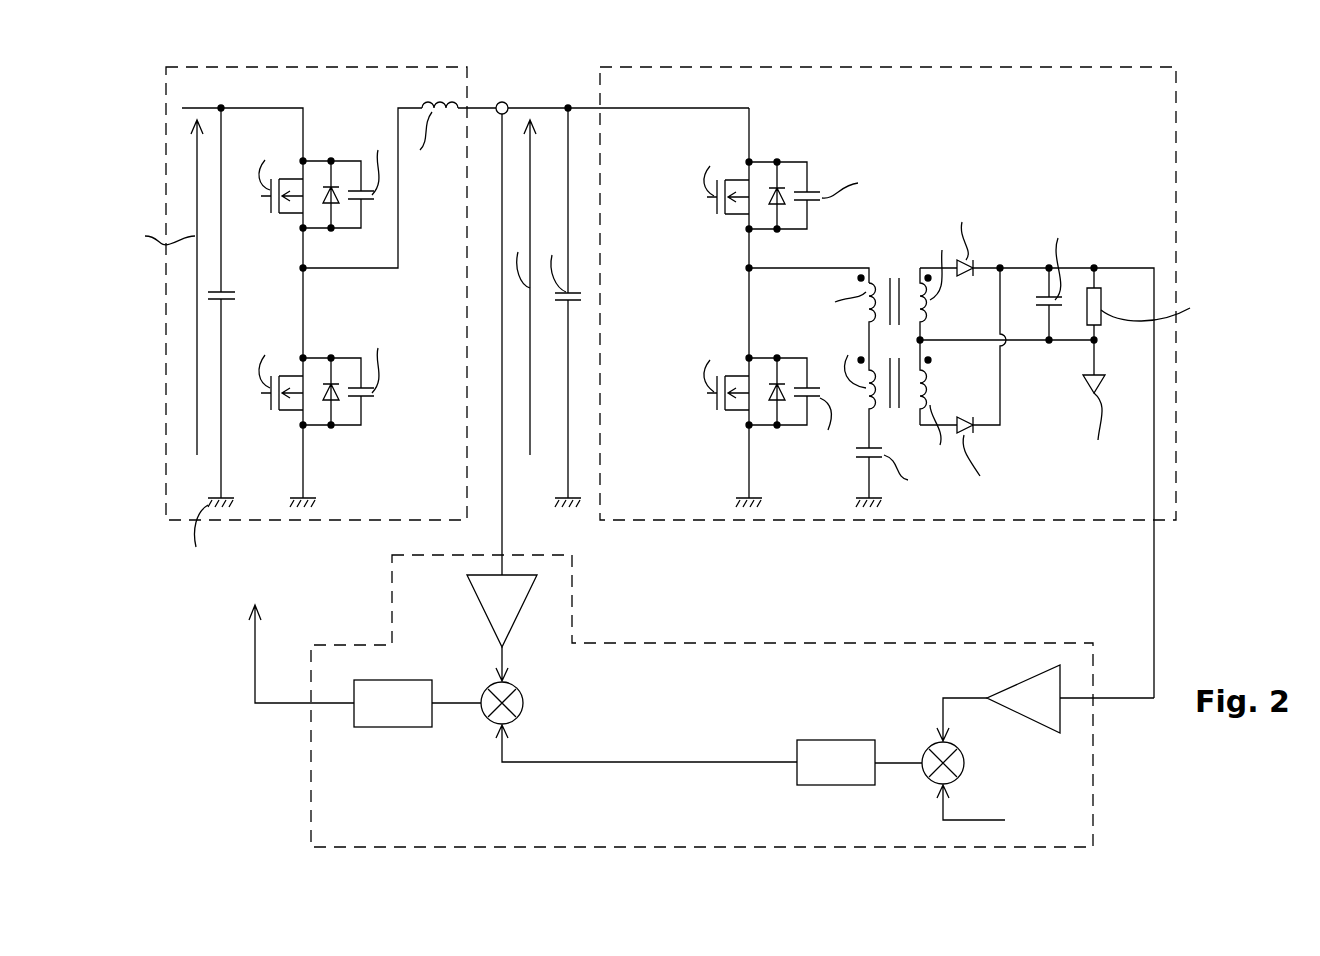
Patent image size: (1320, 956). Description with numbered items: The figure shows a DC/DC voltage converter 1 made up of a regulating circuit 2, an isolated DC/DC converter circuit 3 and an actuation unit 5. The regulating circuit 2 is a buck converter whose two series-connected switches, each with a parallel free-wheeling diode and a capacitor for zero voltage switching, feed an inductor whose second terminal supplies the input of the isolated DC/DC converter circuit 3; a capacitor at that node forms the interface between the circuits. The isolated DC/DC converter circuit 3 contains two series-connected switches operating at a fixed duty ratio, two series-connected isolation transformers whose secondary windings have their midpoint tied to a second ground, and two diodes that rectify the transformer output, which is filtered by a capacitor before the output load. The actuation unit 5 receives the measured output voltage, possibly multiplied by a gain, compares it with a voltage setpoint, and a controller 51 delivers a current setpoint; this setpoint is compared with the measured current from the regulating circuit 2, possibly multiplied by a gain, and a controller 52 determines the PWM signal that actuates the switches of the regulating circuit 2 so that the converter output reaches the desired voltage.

The converter 1 is at (139, 144).
The regulating circuit 2 is at (166, 290).
The isolated DC/DC converter circuit 3 is at (1176, 195).
The actuation unit 5 is at (311, 772).
The controller 51 is at (836, 762).
The controller 52 is at (393, 703).